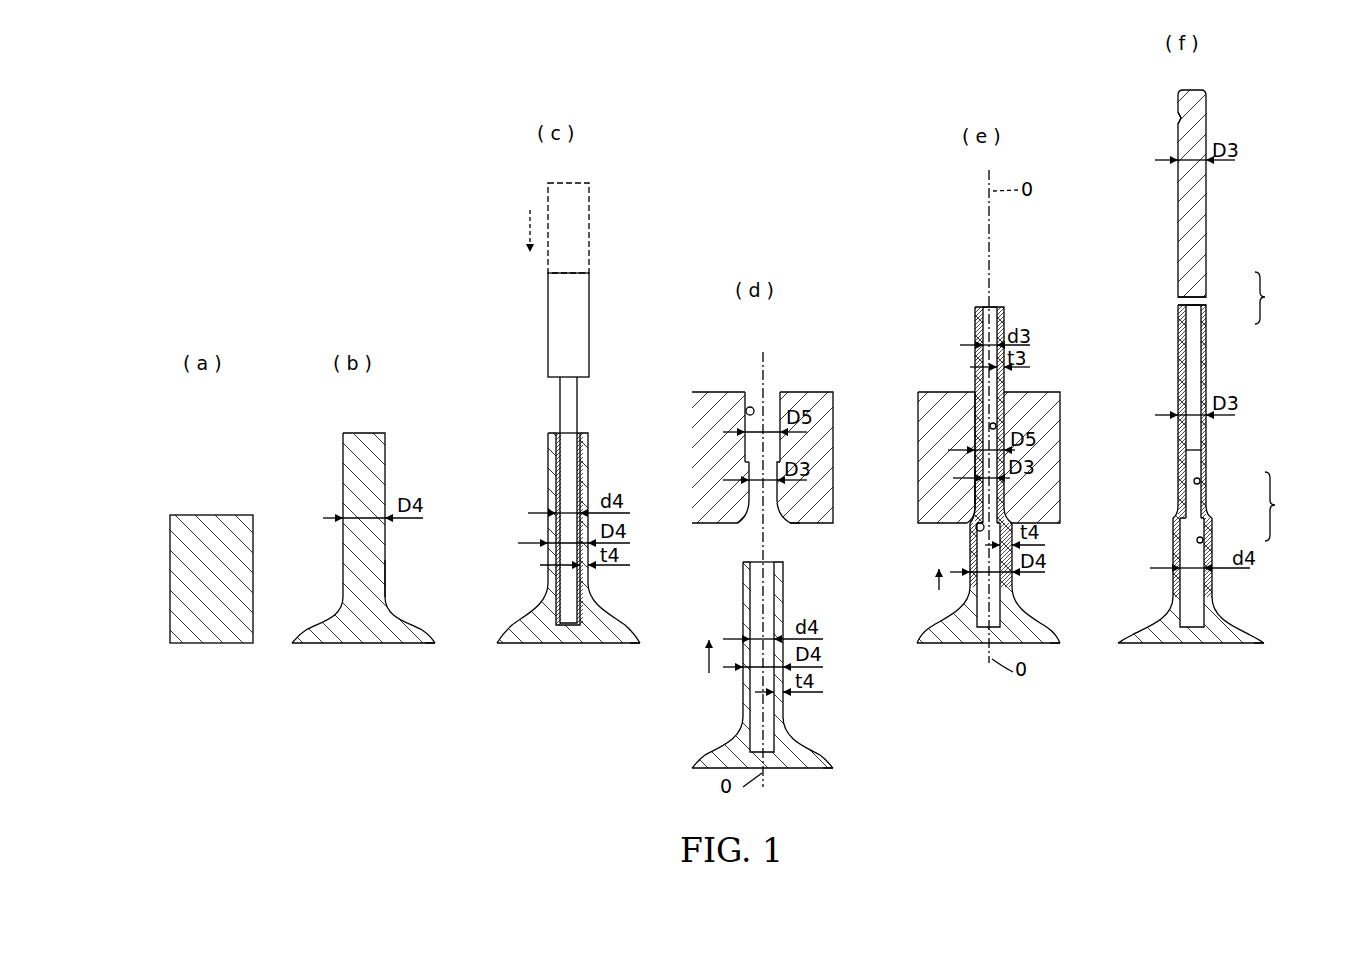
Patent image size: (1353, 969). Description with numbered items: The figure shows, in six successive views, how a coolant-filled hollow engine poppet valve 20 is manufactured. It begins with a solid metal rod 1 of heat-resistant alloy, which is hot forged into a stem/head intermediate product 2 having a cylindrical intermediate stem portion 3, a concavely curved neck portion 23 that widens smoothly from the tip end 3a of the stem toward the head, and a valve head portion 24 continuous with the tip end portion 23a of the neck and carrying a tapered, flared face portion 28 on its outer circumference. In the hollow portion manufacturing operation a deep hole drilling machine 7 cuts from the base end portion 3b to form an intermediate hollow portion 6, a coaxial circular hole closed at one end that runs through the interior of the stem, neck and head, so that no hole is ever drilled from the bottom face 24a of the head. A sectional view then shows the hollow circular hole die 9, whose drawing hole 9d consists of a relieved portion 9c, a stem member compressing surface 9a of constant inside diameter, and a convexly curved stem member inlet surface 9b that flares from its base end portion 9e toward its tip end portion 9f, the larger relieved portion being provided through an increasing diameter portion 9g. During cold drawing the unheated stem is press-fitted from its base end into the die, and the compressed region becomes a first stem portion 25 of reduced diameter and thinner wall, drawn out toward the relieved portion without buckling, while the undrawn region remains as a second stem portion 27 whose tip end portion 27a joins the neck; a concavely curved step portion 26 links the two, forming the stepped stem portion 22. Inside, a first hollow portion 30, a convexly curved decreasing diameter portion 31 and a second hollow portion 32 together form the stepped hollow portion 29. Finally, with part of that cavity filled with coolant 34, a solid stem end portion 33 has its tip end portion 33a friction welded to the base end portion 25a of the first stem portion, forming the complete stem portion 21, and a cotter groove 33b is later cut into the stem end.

The metal rod 1 is at (200, 512).
The stem/head intermediate product 2 is at (332, 430).
The intermediate stem portion 3 is at (390, 440).
The tip end 3a is at (395, 575).
The base end portion 3b is at (575, 440).
The intermediate hollow portion 6 is at (575, 468).
The deep hole drilling machine 7 is at (592, 307).
The hollow circular hole die 9 is at (812, 390).
The stem member compressing surface 9a is at (785, 491).
The stem member inlet surface 9b is at (742, 521).
The relieved portion 9c is at (746, 412).
The drawing hole 9d is at (771, 410).
The base end portion 9e is at (750, 502).
The tip end portion 9f is at (795, 512).
The increasing diameter portion 9g is at (746, 464).
The hollow engine poppet valve 20 is at (1210, 197).
The stem portion 21 is at (1272, 298).
The stepped stem portion 22 is at (1205, 341).
The neck portion 23 is at (405, 606).
The tip end portion 23a is at (425, 630).
The valve head portion 24 is at (437, 647).
The bottom face 24a is at (955, 648).
The first stem portion 25 is at (1010, 491).
The base end portion 25a is at (993, 306).
The step portion 26 is at (768, 497).
The second stem portion 27 is at (1016, 555).
The tip end portion 27a is at (1022, 595).
The face portion 28 is at (434, 641).
The stepped hollow portion 29 is at (1283, 506).
The first hollow portion 30 is at (995, 427).
The decreasing diameter portion 31 is at (975, 531).
The second hollow portion 32 is at (995, 614).
The stem end portion 33 is at (1208, 283).
The tip end portion 33a is at (1178, 297).
The cotter groove 33b is at (1200, 126).
The coolant 34 is at (1190, 496).